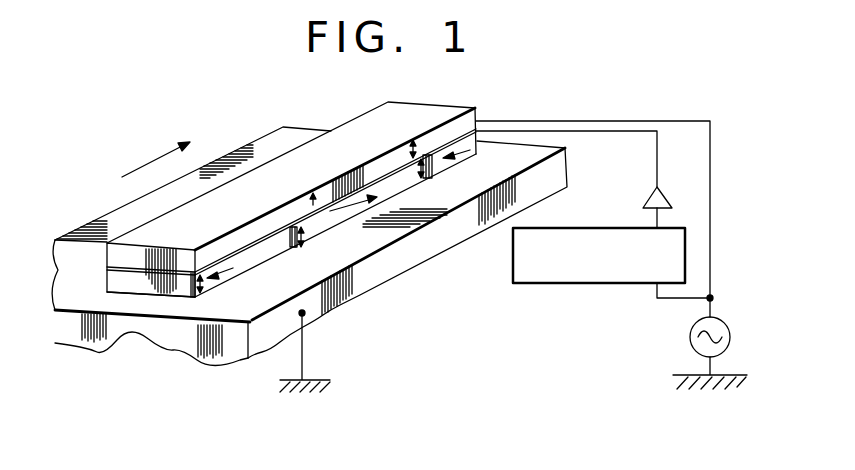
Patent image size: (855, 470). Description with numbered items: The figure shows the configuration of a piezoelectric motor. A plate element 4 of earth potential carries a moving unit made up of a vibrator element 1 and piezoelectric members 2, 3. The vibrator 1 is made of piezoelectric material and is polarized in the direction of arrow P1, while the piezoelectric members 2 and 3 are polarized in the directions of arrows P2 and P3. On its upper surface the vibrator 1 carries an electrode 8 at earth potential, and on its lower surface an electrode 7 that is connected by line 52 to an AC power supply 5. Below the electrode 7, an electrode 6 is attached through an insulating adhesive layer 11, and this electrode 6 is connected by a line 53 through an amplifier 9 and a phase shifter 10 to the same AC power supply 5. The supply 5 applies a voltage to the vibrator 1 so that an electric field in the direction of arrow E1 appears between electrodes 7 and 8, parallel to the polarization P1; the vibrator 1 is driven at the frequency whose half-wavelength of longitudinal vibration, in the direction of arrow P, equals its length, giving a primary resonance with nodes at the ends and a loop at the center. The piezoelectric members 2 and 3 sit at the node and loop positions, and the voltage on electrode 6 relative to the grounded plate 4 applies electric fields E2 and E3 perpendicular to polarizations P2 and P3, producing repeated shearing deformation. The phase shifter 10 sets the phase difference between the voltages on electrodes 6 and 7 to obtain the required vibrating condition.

The vibrator element 1 is at (477, 117).
The piezoelectric member 2 is at (204, 270).
The piezoelectric member 3 is at (350, 212).
The plate element 4 is at (113, 333).
The AC power supply 5 is at (688, 346).
The electrode 6 is at (172, 280).
The electrode 7 is at (123, 295).
The electrode 8 is at (342, 137).
The amplifier 9 is at (648, 192).
The phase shifter 10 is at (583, 284).
The insulating adhesive layer 11 is at (123, 295).
The line 52 is at (590, 120).
The line 53 is at (625, 132).
The direction of longitudinal vibration P is at (156, 155).
The electric field direction E1 is at (417, 147).
The electric field E2 is at (432, 178).
The electric field E3 is at (313, 237).
The polarization direction of vibrator P1 is at (322, 192).
The polarization direction of piezoelectric member 2 P2 is at (467, 152).
The polarization direction of piezoelectric member 3 P3 is at (360, 215).